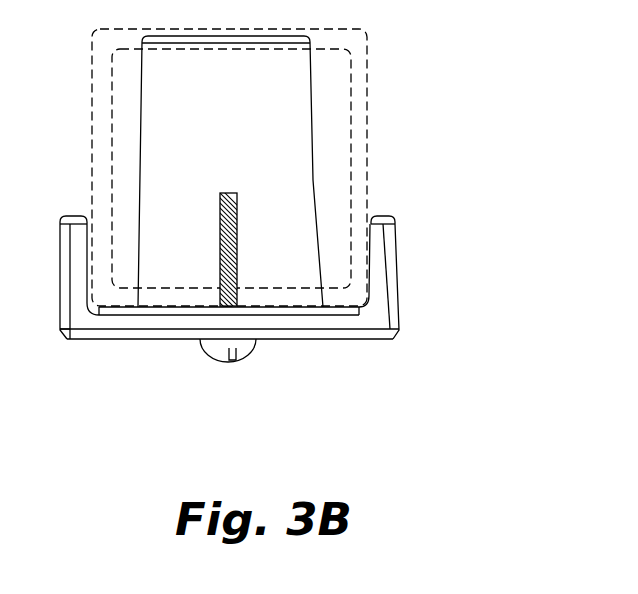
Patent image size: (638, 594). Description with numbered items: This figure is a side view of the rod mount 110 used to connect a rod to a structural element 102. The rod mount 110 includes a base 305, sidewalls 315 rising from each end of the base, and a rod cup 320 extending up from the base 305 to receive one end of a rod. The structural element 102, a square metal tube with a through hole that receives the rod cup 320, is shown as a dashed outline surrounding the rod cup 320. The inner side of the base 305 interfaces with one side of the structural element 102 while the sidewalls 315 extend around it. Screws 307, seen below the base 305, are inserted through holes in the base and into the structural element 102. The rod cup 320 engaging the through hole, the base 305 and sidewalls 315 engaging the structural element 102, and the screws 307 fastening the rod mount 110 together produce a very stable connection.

The structural element 102 is at (357, 77).
The rod cup 320 is at (238, 138).
The rod mount 110 is at (304, 313).
The sidewalls 315 is at (396, 223).
The base 305 is at (107, 322).
The screws 307 is at (235, 350).